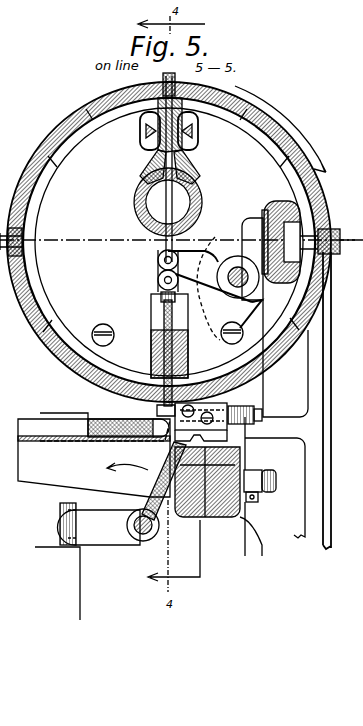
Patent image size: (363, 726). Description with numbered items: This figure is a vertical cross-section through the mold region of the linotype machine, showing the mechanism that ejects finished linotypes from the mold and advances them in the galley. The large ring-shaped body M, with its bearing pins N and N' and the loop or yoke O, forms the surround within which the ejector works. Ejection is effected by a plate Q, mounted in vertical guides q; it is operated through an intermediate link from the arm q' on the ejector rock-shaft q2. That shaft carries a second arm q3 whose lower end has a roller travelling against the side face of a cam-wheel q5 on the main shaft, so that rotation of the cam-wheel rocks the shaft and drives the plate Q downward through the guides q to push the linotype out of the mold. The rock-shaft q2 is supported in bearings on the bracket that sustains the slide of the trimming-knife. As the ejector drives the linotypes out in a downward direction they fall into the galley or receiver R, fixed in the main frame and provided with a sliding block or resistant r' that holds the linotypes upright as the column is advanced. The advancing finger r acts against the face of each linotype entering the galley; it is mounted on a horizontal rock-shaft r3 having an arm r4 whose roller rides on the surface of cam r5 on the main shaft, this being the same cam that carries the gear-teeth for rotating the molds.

The field magnet ring M is at (169, 242).
The bearing pin N is at (259, 310).
The bearing pin N' is at (54, 314).
The yoke loop O is at (198, 178).
The plate Q is at (158, 303).
The vertical guides q is at (168, 350).
The arm q' is at (215, 279).
The rock-shaft q2 is at (265, 312).
The arm q3 is at (258, 388).
The cam-wheel q5 is at (240, 491).
The galley or receiver R is at (94, 458).
The link r is at (146, 481).
The sliding block or resistant r' is at (104, 425).
The rock-shaft r3 is at (143, 541).
The arm r4 is at (108, 540).
The cam r5 is at (75, 597).